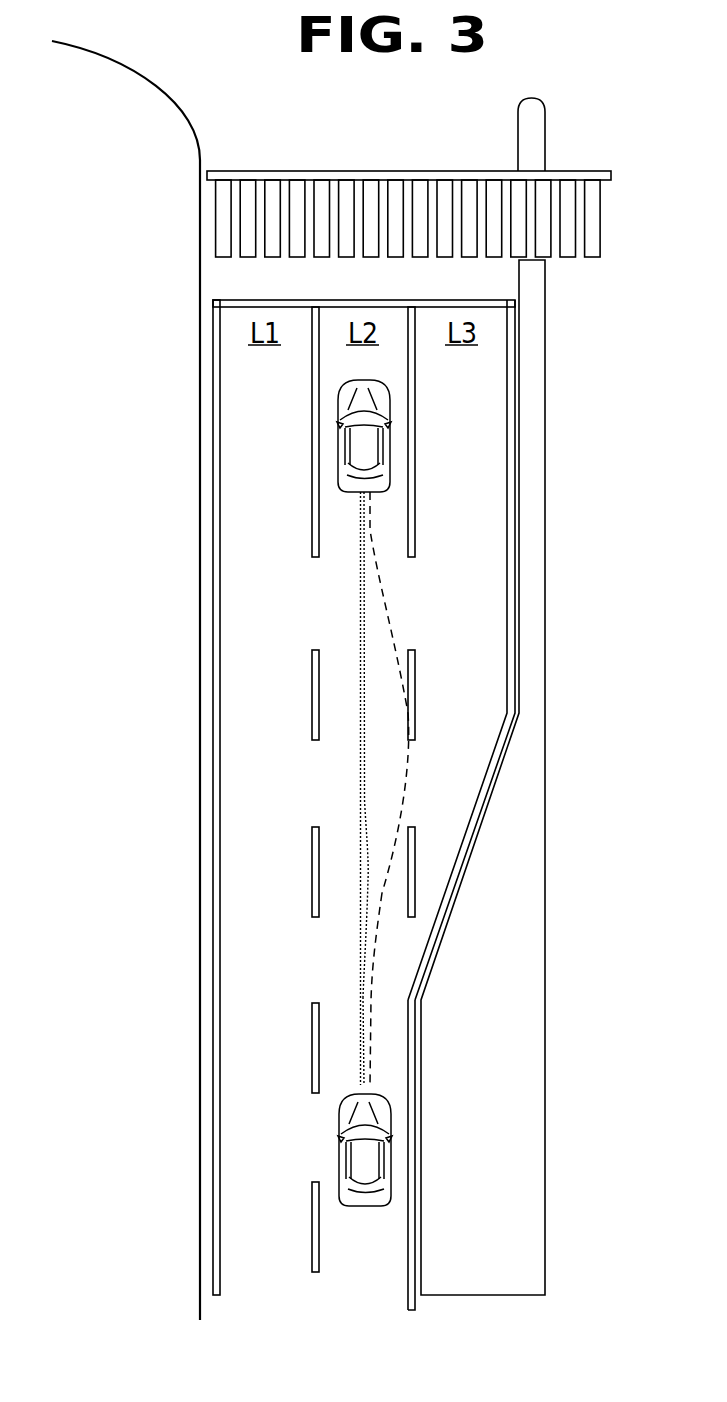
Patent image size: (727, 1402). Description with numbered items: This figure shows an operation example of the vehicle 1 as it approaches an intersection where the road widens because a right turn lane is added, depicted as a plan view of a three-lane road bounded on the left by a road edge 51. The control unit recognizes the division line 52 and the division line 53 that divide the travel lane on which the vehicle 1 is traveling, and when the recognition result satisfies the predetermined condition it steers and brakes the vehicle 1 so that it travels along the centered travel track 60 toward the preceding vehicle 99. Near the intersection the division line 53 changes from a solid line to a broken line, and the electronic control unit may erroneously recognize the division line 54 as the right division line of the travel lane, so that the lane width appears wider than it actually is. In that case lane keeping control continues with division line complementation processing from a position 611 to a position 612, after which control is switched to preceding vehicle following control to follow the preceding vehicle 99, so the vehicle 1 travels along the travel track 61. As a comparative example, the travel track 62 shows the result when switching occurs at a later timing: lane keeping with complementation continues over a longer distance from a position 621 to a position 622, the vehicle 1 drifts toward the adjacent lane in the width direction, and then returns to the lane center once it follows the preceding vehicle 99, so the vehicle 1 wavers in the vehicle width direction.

The vehicle 1 is at (342, 1145).
The road left boundary 51 is at (213, 413).
The division line 52 is at (310, 443).
The division line 53 is at (417, 467).
The division line 54 is at (515, 580).
The travel track 60 is at (360, 770).
The travel track 61 is at (306, 788).
The position 611 is at (367, 997).
The position 612 is at (368, 897).
The travel track 62 is at (496, 788).
The position 621 is at (413, 997).
The position 622 is at (408, 753).
The preceding vehicle 99 is at (388, 400).